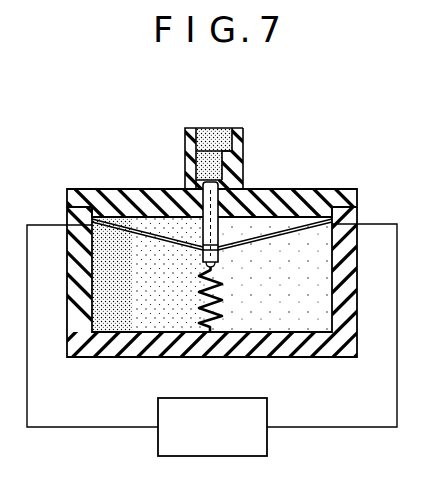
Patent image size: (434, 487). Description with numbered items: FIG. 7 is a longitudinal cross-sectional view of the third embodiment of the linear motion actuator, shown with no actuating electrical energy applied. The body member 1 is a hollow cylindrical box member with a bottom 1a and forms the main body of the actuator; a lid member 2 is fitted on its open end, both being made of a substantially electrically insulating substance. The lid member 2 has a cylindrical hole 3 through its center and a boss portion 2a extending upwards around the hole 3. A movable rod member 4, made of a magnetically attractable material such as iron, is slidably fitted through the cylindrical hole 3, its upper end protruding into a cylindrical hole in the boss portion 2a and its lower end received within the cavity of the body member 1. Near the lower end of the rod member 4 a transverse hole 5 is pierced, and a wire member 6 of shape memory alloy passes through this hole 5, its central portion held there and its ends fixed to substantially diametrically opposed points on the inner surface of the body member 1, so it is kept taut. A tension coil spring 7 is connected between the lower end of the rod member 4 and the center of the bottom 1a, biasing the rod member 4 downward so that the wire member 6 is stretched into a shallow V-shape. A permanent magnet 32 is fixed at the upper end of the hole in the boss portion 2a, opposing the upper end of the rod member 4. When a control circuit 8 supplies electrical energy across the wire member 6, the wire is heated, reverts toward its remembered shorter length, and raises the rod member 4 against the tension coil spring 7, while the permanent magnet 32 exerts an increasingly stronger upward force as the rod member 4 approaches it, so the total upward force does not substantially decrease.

The body member 1 is at (68, 312).
The bottom 1a is at (271, 331).
The lid member 2 is at (118, 189).
The boss portion 2a is at (225, 147).
The cylindrical hole 3 is at (233, 192).
The movable rod member 4 is at (203, 178).
The transverse hole 5 is at (223, 262).
The wire member 6 is at (133, 234).
The tension coil spring 7 is at (197, 313).
The control circuit 8 is at (267, 401).
The permanent magnet 32 is at (200, 130).